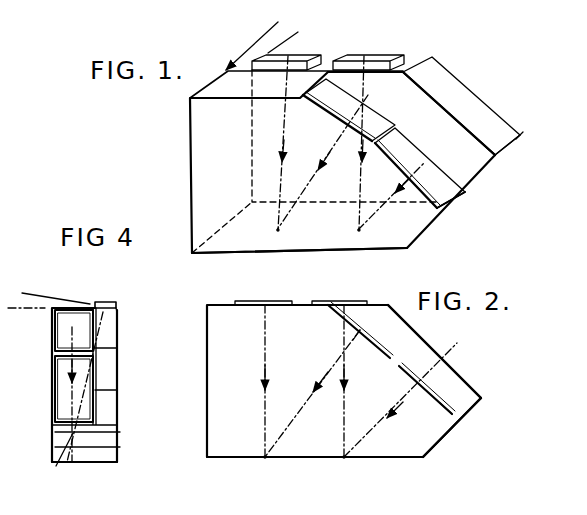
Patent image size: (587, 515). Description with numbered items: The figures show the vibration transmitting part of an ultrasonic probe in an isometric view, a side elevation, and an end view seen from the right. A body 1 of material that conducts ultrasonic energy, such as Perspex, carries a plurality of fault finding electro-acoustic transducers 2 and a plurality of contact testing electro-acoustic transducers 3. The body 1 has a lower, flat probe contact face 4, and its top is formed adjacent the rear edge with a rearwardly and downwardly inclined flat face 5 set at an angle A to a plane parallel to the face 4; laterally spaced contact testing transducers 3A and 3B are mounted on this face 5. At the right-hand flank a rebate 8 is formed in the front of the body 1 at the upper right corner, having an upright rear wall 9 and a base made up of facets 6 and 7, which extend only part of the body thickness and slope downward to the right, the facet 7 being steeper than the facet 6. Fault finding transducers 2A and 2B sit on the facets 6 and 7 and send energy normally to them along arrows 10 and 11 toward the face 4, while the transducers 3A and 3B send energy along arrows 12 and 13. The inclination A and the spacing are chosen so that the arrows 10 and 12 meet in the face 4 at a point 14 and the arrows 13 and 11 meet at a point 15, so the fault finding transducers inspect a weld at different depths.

In FIG. 1, the body 1 is at (222, 192).
In FIG. 4, the body 1 is at (84, 385).
In FIG. 2, the body 1 is at (344, 381).
In FIG. 1, the fault finding electro-acoustic transducers 2 is at (389, 143).
In FIG. 4, the fault finding electro-acoustic transducers 2 is at (101, 366).
In FIG. 2, the fault finding electro-acoustic transducers 2 is at (386, 358).
In FIG. 1, the fault finding transducer 2A is at (345, 104).
In FIG. 4, the fault finding transducer 2A is at (82, 341).
In FIG. 2, the fault finding transducer 2A is at (341, 313).
In FIG. 1, the fault finding transducer 2B is at (430, 173).
In FIG. 4, the fault finding transducer 2B is at (82, 400).
In FIG. 2, the fault finding transducer 2B is at (402, 367).
In FIG. 1, the contact testing electro-acoustic transducers 3 is at (322, 59).
In FIG. 4, the contact testing electro-acoustic transducers 3 is at (101, 302).
In FIG. 2, the contact testing electro-acoustic transducers 3 is at (277, 300).
In FIG. 1, the contact testing transducer 3A is at (282, 59).
In FIG. 2, the contact testing transducer 3A is at (237, 300).
In FIG. 1, the contact testing transducer 3B is at (402, 52).
In FIG. 2, the contact testing transducer 3B is at (370, 298).
In FIG. 1, the probe contact face 4 is at (298, 238).
In FIG. 4, the probe contact face 4 is at (95, 463).
In FIG. 2, the probe contact face 4 is at (287, 459).
In FIG. 4, the inclined flat face 5 is at (114, 312).
In FIG. 1, the facet 6 is at (365, 122).
In FIG. 2, the facet 6 is at (355, 347).
In FIG. 1, the facet 7 is at (423, 208).
In FIG. 2, the facet 7 is at (438, 406).
In FIG. 1, the rebate 8 is at (447, 146).
In FIG. 2, the rebate 8 is at (467, 385).
In FIG. 1, the rear wall 9 is at (492, 150).
In FIG. 2, the rear wall 9 is at (455, 390).
In FIG. 1, the arrow 10 is at (322, 162).
In FIG. 4, the arrow 10 is at (56, 462).
In FIG. 2, the arrow 10 is at (312, 393).
In FIG. 1, the arrow 11 is at (391, 197).
In FIG. 4, the arrow 11 is at (83, 402).
In FIG. 2, the arrow 11 is at (400, 400).
In FIG. 1, the arrow 12 is at (281, 182).
In FIG. 4, the arrow 12 is at (100, 395).
In FIG. 2, the arrow 12 is at (264, 402).
In FIG. 1, the arrow 13 is at (361, 182).
In FIG. 4, the arrow 13 is at (100, 436).
In FIG. 2, the arrow 13 is at (343, 407).
In FIG. 1, the point 14 is at (278, 231).
In FIG. 2, the point 14 is at (266, 459).
In FIG. 1, the point 15 is at (360, 229).
In FIG. 2, the point 15 is at (345, 459).
In FIG. 1, the angle A is at (240, 51).
In FIG. 4, the angle A is at (48, 296).